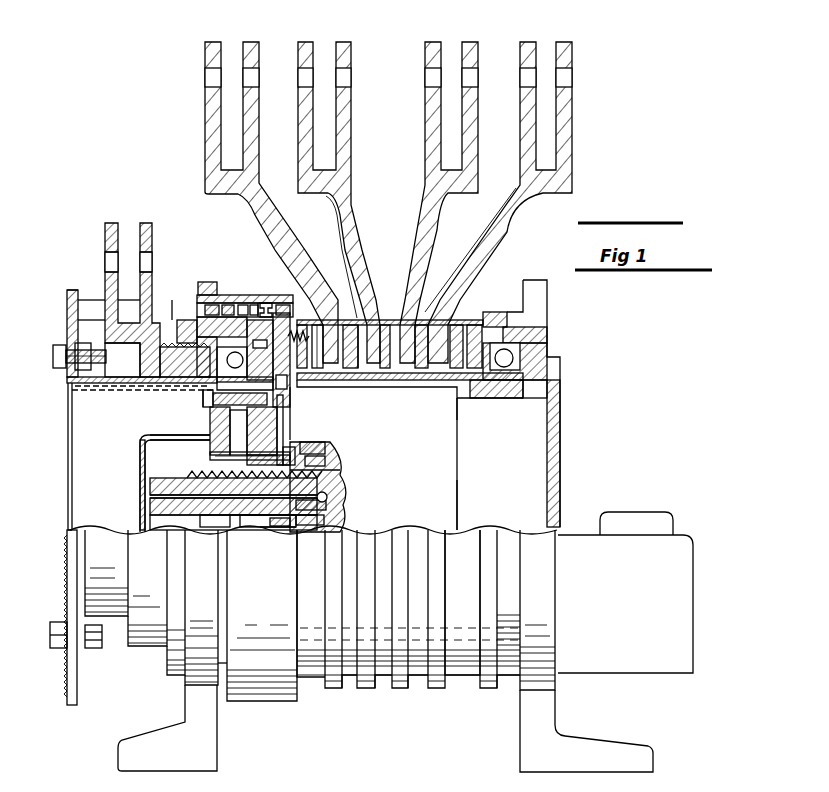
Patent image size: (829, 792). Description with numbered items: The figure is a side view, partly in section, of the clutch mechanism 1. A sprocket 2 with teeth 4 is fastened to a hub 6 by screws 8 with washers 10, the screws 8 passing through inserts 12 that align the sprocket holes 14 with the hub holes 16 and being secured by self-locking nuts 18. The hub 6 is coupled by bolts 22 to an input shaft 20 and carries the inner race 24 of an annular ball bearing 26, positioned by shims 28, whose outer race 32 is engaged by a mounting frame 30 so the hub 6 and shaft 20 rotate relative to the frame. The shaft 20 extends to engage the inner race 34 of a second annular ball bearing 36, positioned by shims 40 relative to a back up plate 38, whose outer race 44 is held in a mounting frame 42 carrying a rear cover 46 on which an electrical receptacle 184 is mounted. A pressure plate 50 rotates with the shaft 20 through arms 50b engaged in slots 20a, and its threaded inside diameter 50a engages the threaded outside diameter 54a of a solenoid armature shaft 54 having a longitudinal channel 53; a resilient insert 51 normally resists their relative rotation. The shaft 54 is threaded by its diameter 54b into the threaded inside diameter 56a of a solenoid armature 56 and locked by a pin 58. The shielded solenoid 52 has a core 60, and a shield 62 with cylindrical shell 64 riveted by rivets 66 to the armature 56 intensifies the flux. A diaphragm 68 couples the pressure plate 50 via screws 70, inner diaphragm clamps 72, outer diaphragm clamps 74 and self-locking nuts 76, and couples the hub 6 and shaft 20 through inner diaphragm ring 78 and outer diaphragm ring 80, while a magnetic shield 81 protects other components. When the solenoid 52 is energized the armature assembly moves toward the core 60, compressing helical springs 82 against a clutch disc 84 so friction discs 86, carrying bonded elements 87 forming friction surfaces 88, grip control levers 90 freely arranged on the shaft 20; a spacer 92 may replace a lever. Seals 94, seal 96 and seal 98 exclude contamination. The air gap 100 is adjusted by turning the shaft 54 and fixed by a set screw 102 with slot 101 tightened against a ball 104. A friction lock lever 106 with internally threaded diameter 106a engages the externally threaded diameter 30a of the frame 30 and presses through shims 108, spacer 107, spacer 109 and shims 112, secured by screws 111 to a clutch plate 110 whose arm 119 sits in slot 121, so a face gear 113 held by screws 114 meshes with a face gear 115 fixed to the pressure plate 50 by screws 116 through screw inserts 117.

The clutch mechanism 1 is at (88, 172).
The sprocket 2 is at (58, 300).
The teeth 4 is at (72, 290).
The hub 6 is at (100, 420).
The screws 8 is at (52, 356).
The washers 10 is at (68, 315).
The inserts 12 is at (78, 320).
The sprocket holes 14 is at (68, 345).
The hub holes 16 is at (70, 380).
The self-locking nuts 18 is at (95, 388).
The input shaft 20 is at (325, 383).
The slots 20a is at (335, 376).
The bolts 22 is at (203, 400).
The inner race 24 is at (200, 387).
The annular ball bearing 26 is at (160, 366).
The shims 28 is at (286, 360).
The mounting frame 30 is at (96, 384).
The externally threaded diameter 30a is at (140, 350).
The outer race 32 is at (232, 352).
The inner race 34 is at (485, 398).
The annular ball bearing 36 is at (520, 375).
The back up plate 38 is at (520, 322).
The shims 40 is at (470, 398).
The mounting frame 42 is at (555, 355).
The outer race 44 is at (512, 345).
The rear cover 46 is at (560, 480).
The pressure plate 50 is at (182, 478).
The threaded inside diameter 50a is at (150, 436).
The arms 50b is at (297, 428).
The resilient insert 51 is at (225, 532).
The shielded solenoid 52 is at (457, 500).
The longitudinal channel 53 is at (140, 530).
The solenoid armature shaft 54 is at (160, 528).
The threaded outside diameter 54a is at (150, 485).
The threaded outside diameter 54b is at (262, 525).
The solenoid armature 56 is at (300, 448).
The threaded inside diameter 56a is at (340, 470).
The pin 58 is at (302, 532).
The core 60 is at (343, 490).
The shield 62 is at (305, 372).
The cylindrical shell 64 is at (442, 415).
The rivets 66 is at (312, 460).
The diaphragm 68 is at (215, 435).
The screws 70 is at (262, 458).
The inner diaphragm clamps 72 is at (210, 530).
The outer diaphragm clamps 74 is at (220, 448).
The self-locking nuts 76 is at (210, 458).
The inner diaphragm ring 78 is at (262, 431).
The outer diaphragm ring 80 is at (225, 396).
The magnetic shield 81 is at (150, 512).
The helical springs 82 is at (316, 310).
The clutch disc 84 is at (320, 318).
The friction discs 86 is at (348, 370).
The friction elements 87 is at (478, 325).
The friction surfaces 88 is at (384, 370).
The control levers 90 is at (258, 205).
The spacer 92 is at (452, 325).
The seals 94 is at (375, 300).
The seal 96 is at (472, 350).
The seal 98 is at (298, 725).
The air gap 100 is at (333, 455).
The slot 101 is at (280, 527).
The set screw 102 is at (280, 540).
The ball 104 is at (333, 503).
The friction lock lever 106 is at (146, 223).
The internally threaded diameter 106a is at (139, 299).
The spacer 107 is at (172, 300).
The shims 108 is at (178, 322).
The spacer 109 is at (198, 295).
The clutch plate 110 is at (224, 347).
The screws 111 is at (216, 295).
The shims 112 is at (208, 290).
The face gear 113 is at (240, 295).
The screws 114 is at (234, 295).
The face gear 115 is at (258, 295).
The screws 116 is at (280, 297).
The screw inserts 117 is at (290, 290).
The arm 119 is at (244, 295).
The slot 121 is at (228, 295).
The electrical receptacle 184 is at (632, 512).